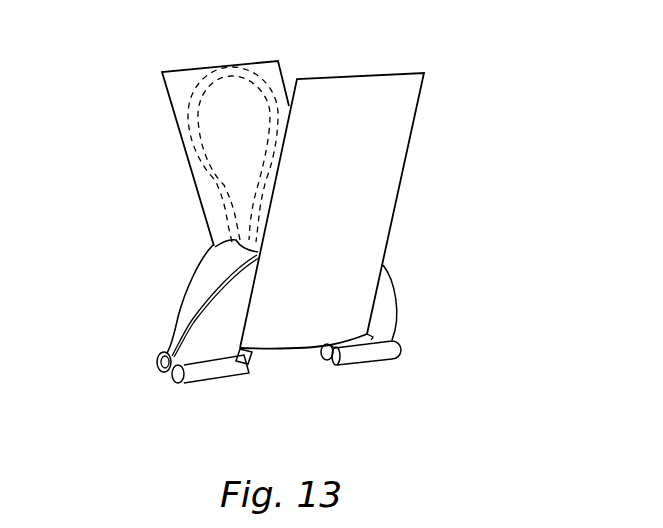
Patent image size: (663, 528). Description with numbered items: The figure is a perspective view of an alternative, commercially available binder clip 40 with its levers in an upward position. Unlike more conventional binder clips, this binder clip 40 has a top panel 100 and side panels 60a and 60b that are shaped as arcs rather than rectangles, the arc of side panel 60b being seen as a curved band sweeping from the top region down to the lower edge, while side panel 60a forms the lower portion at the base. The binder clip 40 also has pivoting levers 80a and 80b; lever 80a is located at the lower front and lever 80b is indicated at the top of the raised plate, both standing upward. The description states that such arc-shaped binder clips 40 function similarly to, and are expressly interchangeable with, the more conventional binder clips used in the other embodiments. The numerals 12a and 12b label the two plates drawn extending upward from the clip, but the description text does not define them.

The binder clip 40 is at (118, 314).
The first panel 12a is at (396, 154).
The second panel 12b is at (180, 133).
The side panel 60a is at (200, 357).
The side panel 60b is at (185, 283).
The pivoting lever 80a is at (252, 357).
The pivoting lever 80b is at (240, 73).
The top panel 100 is at (257, 246).